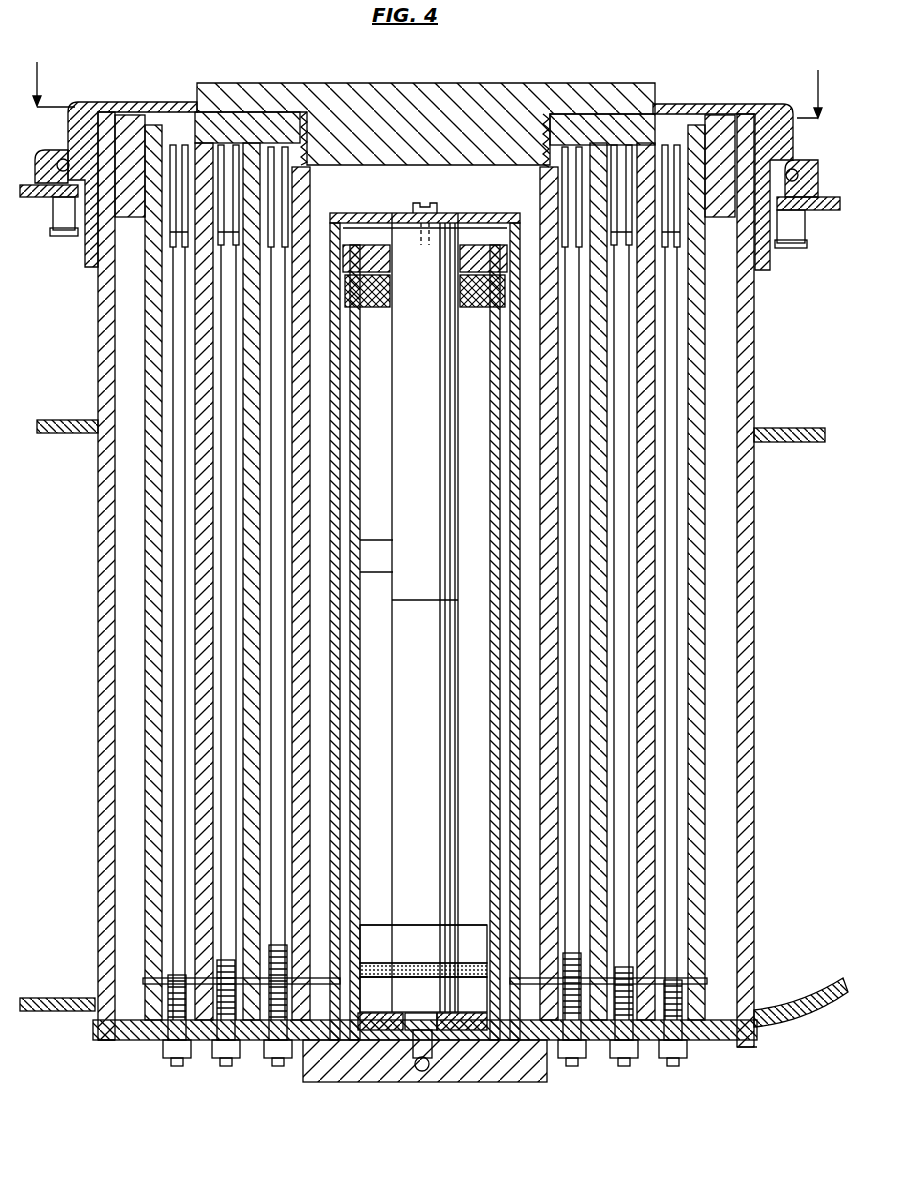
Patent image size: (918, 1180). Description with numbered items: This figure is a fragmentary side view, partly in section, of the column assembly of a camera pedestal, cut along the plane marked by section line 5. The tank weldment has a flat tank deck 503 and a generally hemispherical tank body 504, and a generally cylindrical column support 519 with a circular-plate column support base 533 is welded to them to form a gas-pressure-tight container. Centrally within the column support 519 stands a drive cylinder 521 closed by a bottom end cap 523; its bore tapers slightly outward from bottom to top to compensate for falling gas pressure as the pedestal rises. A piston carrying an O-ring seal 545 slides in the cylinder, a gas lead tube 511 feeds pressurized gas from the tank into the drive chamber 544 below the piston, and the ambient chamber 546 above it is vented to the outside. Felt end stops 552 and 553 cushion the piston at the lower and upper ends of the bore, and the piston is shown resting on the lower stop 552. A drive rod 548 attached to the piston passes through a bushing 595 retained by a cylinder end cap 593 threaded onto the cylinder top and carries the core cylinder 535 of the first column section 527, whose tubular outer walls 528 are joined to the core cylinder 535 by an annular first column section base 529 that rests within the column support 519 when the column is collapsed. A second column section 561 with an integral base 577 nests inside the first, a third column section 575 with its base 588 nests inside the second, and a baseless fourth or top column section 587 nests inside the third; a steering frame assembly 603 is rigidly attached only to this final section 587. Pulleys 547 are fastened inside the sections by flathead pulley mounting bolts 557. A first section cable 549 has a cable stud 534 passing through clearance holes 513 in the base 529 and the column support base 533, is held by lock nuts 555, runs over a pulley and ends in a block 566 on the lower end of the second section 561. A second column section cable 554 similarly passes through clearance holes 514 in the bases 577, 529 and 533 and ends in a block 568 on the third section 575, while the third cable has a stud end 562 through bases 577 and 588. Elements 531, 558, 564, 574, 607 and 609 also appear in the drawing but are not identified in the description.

The section line 5- 5 is at (427, 75).
The tank deck 503 is at (782, 430).
The tank body 504 is at (75, 1011).
The gas lead tube 511 is at (422, 1072).
The clearance holes 513 is at (165, 1012).
The clearance holes 514 is at (178, 1002).
The column support 519 is at (105, 312).
The drive cylinder 521 is at (492, 738).
The bottom end cap 523 is at (553, 1045).
The first column section 527 is at (138, 598).
The outer walls 528 is at (148, 522).
The first column section base 529 is at (212, 1062).
The bolt 531 is at (577, 1062).
The column support base 533 is at (118, 1045).
The cable stud 534 is at (182, 1008).
The core cylinder 535 is at (412, 208).
The drive chamber 544 is at (438, 1013).
The seal 545 is at (428, 1030).
The ambient chamber 546 is at (384, 728).
The pulleys 547 is at (173, 238).
The drive rod 548 is at (425, 598).
The first section cable 549 is at (172, 388).
The lower end stop 552 is at (380, 1035).
The upper end stop 553 is at (395, 296).
The second column section cable 554 is at (215, 338).
The lock nuts 555 is at (170, 1060).
The pulley mounting bolts 557 is at (268, 170).
The nut 558 is at (240, 1062).
The second column section 561 is at (200, 460).
The stud end 562 is at (336, 1000).
The nut 564 is at (265, 1058).
The block 566 is at (192, 1002).
The block 568 is at (365, 922).
The piston 574 is at (350, 950).
The third column section 575 is at (320, 540).
The second column section base 577 is at (572, 1066).
The fourth column section 587 is at (320, 572).
The third column section base 588 is at (490, 1035).
The cylinder end cap 593 is at (352, 245).
The bushing 595 is at (485, 250).
The steering frame assembly 603 is at (192, 98).
The post 607 is at (72, 236).
The fitting plate 609 is at (38, 198).